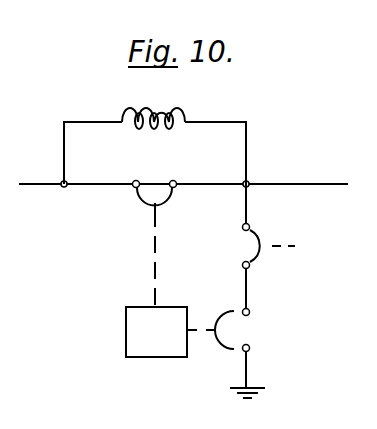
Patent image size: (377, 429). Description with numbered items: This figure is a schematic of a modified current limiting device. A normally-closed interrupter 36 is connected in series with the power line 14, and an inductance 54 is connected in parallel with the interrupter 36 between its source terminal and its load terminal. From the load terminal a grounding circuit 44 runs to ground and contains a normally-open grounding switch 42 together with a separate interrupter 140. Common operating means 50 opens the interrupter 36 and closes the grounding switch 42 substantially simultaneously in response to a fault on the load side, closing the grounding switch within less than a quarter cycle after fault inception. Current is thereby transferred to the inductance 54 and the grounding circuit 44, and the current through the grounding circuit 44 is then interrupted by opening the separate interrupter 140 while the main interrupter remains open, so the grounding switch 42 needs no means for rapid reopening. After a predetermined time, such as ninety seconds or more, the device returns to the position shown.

The power line 14 is at (301, 184).
The interrupter 36 is at (155, 185).
The grounding switch 42 is at (243, 330).
The grounding circuit 44 is at (249, 369).
The operating means 50 is at (126, 322).
The inductance 54 is at (126, 110).
The separate interrupter 140 is at (250, 245).